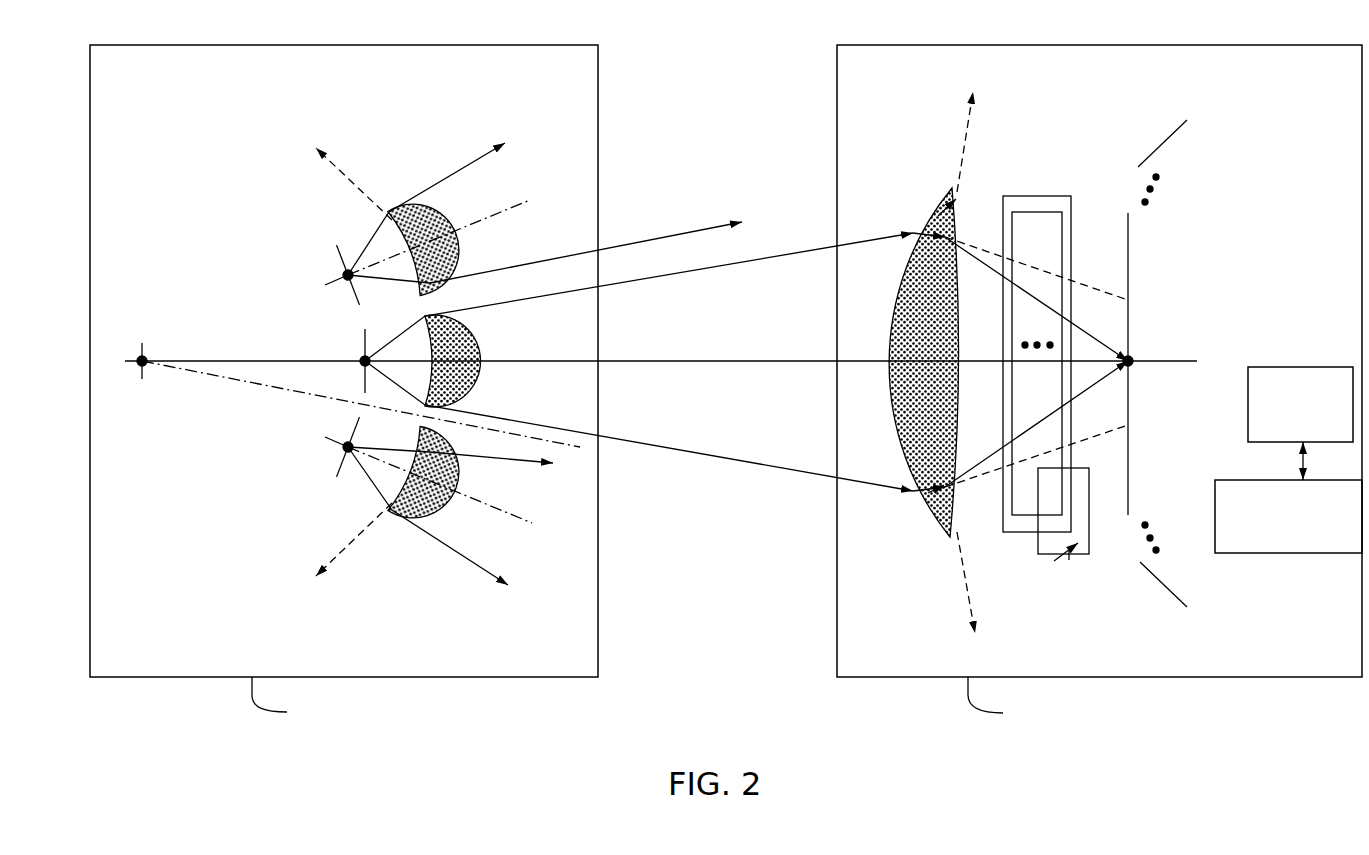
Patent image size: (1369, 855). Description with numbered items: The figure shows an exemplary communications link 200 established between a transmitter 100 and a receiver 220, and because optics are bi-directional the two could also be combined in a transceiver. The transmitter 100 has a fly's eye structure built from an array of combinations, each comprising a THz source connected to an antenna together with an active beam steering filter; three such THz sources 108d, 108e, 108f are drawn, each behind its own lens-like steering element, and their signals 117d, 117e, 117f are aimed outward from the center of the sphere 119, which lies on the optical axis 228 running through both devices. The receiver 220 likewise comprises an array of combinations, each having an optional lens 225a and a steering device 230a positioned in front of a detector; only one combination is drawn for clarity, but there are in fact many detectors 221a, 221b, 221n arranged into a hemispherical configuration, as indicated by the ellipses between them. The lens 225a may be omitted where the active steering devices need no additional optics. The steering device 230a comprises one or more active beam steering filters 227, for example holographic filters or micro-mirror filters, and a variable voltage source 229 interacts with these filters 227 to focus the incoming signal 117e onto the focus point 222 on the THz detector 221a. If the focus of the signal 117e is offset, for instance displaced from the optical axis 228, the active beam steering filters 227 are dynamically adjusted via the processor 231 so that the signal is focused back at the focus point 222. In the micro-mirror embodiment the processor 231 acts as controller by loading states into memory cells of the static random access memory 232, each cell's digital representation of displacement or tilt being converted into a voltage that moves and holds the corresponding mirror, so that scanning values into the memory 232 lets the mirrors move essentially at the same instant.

The transmitter 100 is at (379, 660).
The THz source 108d is at (346, 272).
The THz source 108e is at (363, 358).
The THz source 108f is at (346, 451).
The signal 117d is at (608, 248).
The signal 117e is at (673, 277).
The signal 117f is at (497, 455).
The center of the sphere 119 is at (140, 364).
The communications link 200 is at (726, 393).
The receiver 220 is at (1172, 667).
The THz detector 221a is at (1128, 231).
The THz detector 221b is at (1167, 140).
The THz detector 221n is at (1170, 590).
The focus point 222 is at (1131, 365).
The lens 225a is at (957, 197).
The active beam steering filter 227 is at (1003, 196).
The optical axis 228 is at (1172, 361).
The variable voltage source 229 is at (1076, 556).
The steering device 230a is at (1020, 532).
The processor 231 is at (1269, 537).
The static random access memory 232 is at (1281, 424).